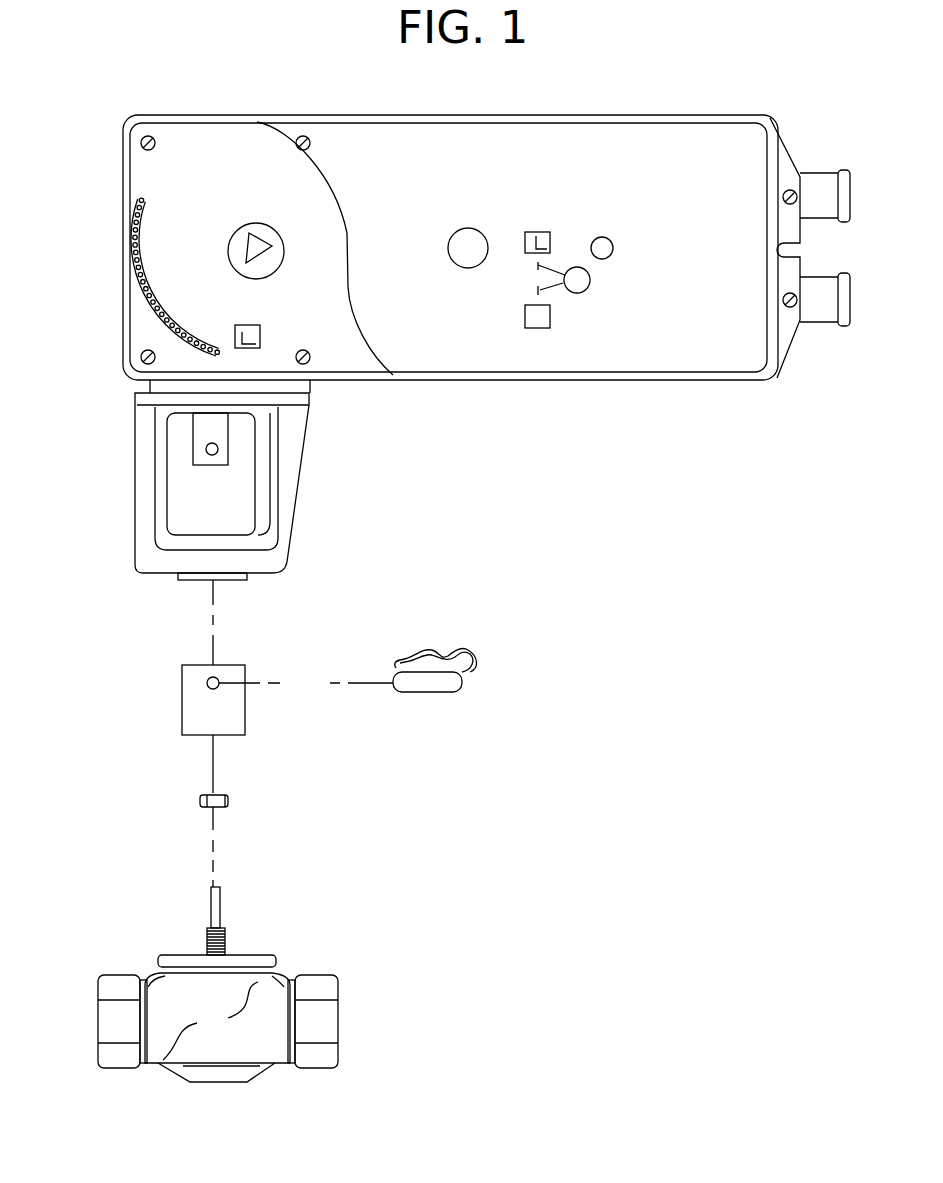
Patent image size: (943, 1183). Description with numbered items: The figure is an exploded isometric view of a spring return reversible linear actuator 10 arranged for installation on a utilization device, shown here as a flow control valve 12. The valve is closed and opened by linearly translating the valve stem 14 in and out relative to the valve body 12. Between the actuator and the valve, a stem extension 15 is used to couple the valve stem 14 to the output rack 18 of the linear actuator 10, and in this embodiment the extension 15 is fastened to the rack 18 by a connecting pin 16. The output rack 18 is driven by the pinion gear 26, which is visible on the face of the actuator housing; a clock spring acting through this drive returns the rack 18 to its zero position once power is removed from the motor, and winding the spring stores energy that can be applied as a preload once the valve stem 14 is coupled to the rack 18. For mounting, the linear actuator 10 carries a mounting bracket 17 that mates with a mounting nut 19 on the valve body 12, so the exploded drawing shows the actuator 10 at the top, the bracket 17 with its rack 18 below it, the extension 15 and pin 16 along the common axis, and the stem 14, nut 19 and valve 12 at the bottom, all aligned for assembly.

The linear actuator 10 is at (480, 158).
The pinion gear 26 is at (261, 224).
The mounting bracket 17 is at (162, 505).
The output rack 18 is at (218, 447).
The stem extension 15 is at (187, 723).
The connecting pin 16 is at (440, 686).
The valve stem 14 is at (220, 903).
The mounting nut 19 is at (260, 953).
The flow control valve 12 is at (248, 1052).